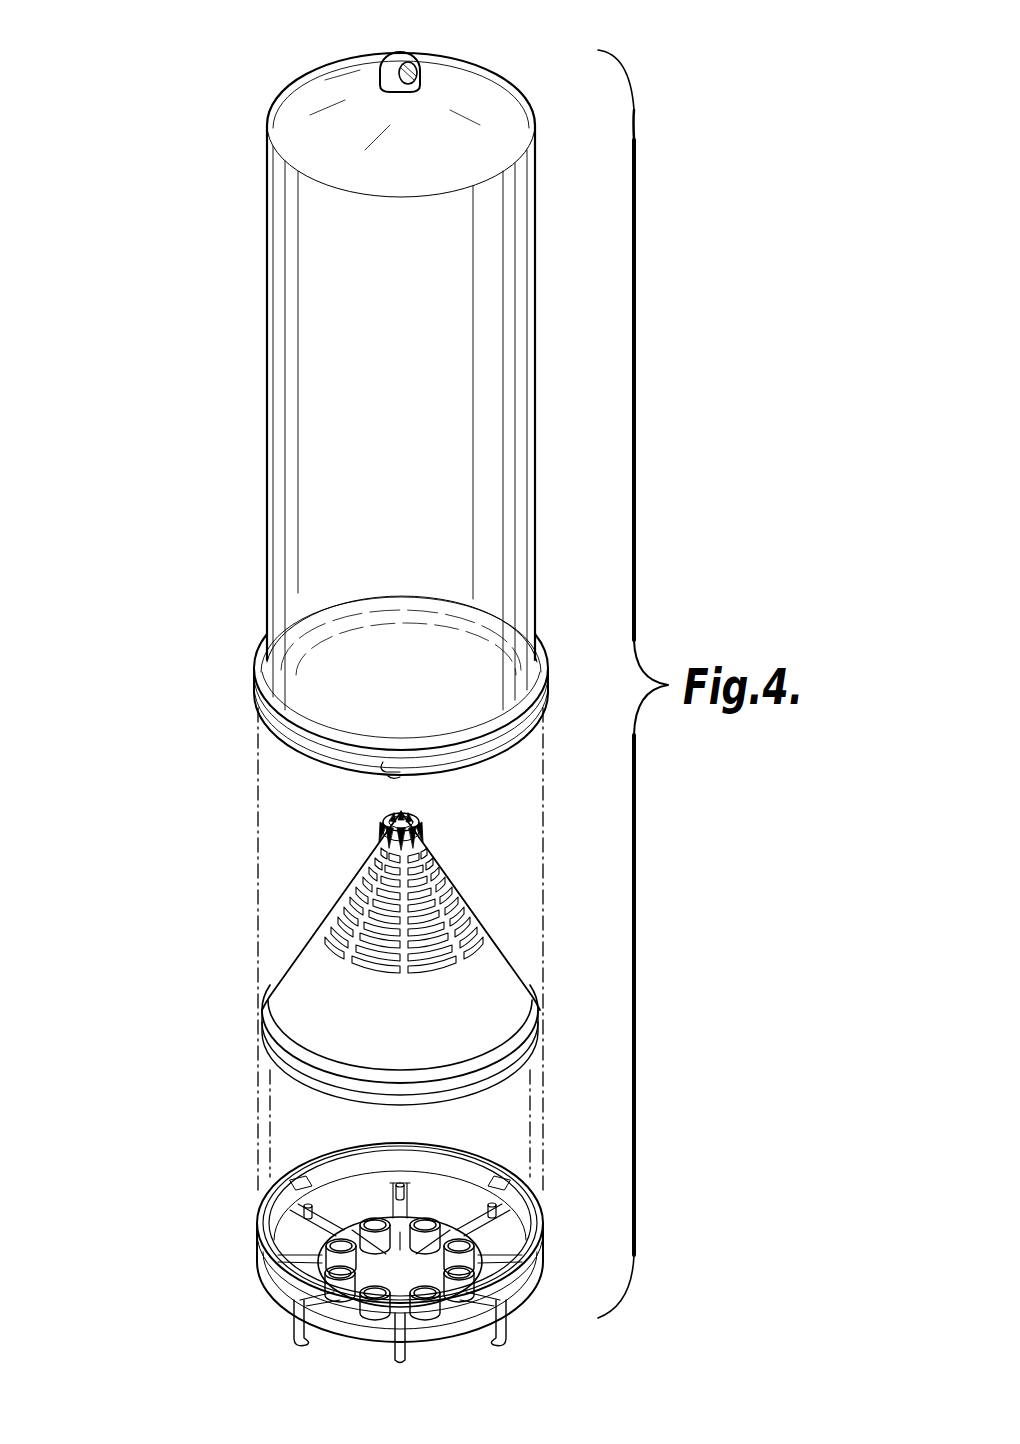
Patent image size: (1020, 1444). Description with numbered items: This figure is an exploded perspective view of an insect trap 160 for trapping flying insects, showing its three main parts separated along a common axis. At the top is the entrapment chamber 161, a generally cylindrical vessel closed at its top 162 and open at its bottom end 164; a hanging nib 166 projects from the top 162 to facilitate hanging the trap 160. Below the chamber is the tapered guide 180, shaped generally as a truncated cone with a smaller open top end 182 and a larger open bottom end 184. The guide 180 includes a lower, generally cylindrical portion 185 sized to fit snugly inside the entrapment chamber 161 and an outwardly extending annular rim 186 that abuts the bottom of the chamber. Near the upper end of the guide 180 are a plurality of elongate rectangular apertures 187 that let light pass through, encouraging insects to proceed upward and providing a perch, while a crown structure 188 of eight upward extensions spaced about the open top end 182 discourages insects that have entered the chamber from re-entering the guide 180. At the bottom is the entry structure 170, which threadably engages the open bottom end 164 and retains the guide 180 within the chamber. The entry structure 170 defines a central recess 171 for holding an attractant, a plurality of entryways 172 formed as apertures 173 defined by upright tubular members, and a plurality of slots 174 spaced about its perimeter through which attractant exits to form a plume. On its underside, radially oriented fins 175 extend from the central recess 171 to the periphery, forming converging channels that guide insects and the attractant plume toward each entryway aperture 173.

The insect trap 160 is at (157, 95).
The entrapment chamber 161 is at (520, 375).
The top 162 is at (298, 100).
The hanging nib 166 is at (385, 62).
The open bottom end 164 is at (525, 742).
The tapered guide 180 is at (313, 855).
The open top end 182 is at (385, 815).
The crown structure 188 is at (415, 812).
The apertures 187 is at (350, 890).
The annular rim 186 is at (532, 1015).
The lower cylindrical portion 185 is at (342, 1070).
The open bottom end 184 is at (470, 1093).
The entry structure 170 is at (252, 1212).
The central recess 171 is at (407, 1277).
The entryways 172 is at (330, 1250).
The entryway apertures 173 is at (320, 1272).
The slots 174 is at (282, 1220).
The fins 175 is at (312, 1340).